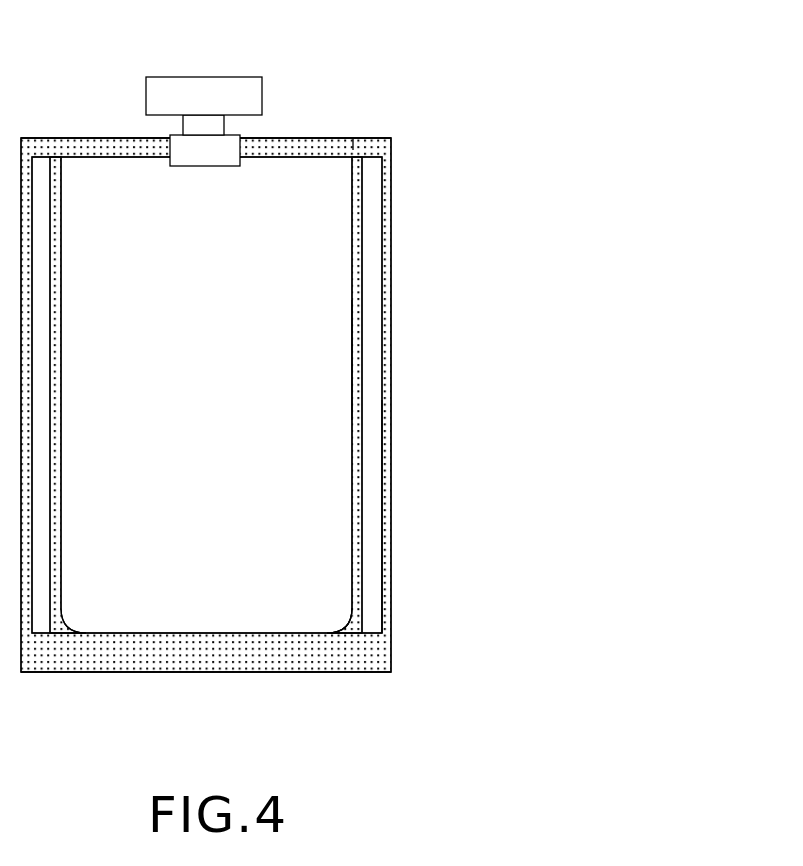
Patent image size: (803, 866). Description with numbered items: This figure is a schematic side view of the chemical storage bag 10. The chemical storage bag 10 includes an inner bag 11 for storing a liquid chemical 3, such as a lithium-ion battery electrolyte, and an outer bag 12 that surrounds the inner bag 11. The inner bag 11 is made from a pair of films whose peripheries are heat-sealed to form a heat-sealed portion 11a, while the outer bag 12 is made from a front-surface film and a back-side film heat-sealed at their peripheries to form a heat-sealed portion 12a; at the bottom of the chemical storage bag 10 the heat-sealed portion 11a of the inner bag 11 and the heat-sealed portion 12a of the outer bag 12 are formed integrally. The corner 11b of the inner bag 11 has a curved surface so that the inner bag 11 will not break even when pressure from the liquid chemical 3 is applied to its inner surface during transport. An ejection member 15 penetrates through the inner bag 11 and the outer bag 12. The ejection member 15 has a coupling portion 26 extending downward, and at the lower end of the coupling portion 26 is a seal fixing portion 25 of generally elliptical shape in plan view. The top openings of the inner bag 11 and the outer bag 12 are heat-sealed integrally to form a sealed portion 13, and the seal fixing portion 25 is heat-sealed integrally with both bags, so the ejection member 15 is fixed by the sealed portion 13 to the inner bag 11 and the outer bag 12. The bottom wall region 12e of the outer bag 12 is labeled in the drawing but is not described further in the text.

The chemical storage bag 10 is at (271, 374).
The outer bag 12 is at (390, 225).
The heat-sealed portion 12a is at (383, 530).
The case bottom wall 12e is at (210, 672).
The sealed portion 13 is at (82, 138).
The ejection member 15 is at (206, 84).
The seal fixing portion 25 is at (205, 167).
The coupling portion 26 is at (218, 126).
The inner bag 11 is at (360, 294).
The heat-sealed portion 11a is at (358, 366).
The corner 11b is at (345, 612).
The liquid chemical 3 is at (296, 440).